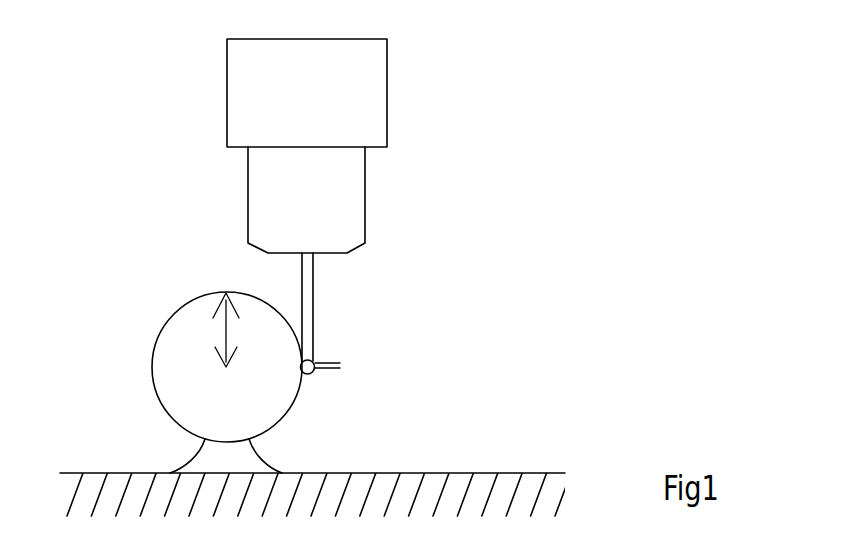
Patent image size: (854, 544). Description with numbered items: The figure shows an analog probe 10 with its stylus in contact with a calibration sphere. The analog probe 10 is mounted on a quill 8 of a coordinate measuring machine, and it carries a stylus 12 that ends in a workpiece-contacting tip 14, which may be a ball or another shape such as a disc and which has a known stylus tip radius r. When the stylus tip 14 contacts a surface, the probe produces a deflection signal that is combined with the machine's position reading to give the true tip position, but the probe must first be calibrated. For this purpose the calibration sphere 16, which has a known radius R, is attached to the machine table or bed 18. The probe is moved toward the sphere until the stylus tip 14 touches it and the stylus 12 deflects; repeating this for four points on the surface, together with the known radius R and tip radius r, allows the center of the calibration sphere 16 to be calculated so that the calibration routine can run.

The quill 8 is at (373, 75).
The analog probe 10 is at (350, 178).
The stylus 12 is at (311, 312).
The workpiece-contacting tip 14 is at (307, 375).
The stylus tip radius r is at (340, 368).
The calibration sphere 16 is at (163, 378).
The radius of the calibration sphere R is at (235, 330).
The machine table or bed 18 is at (526, 477).